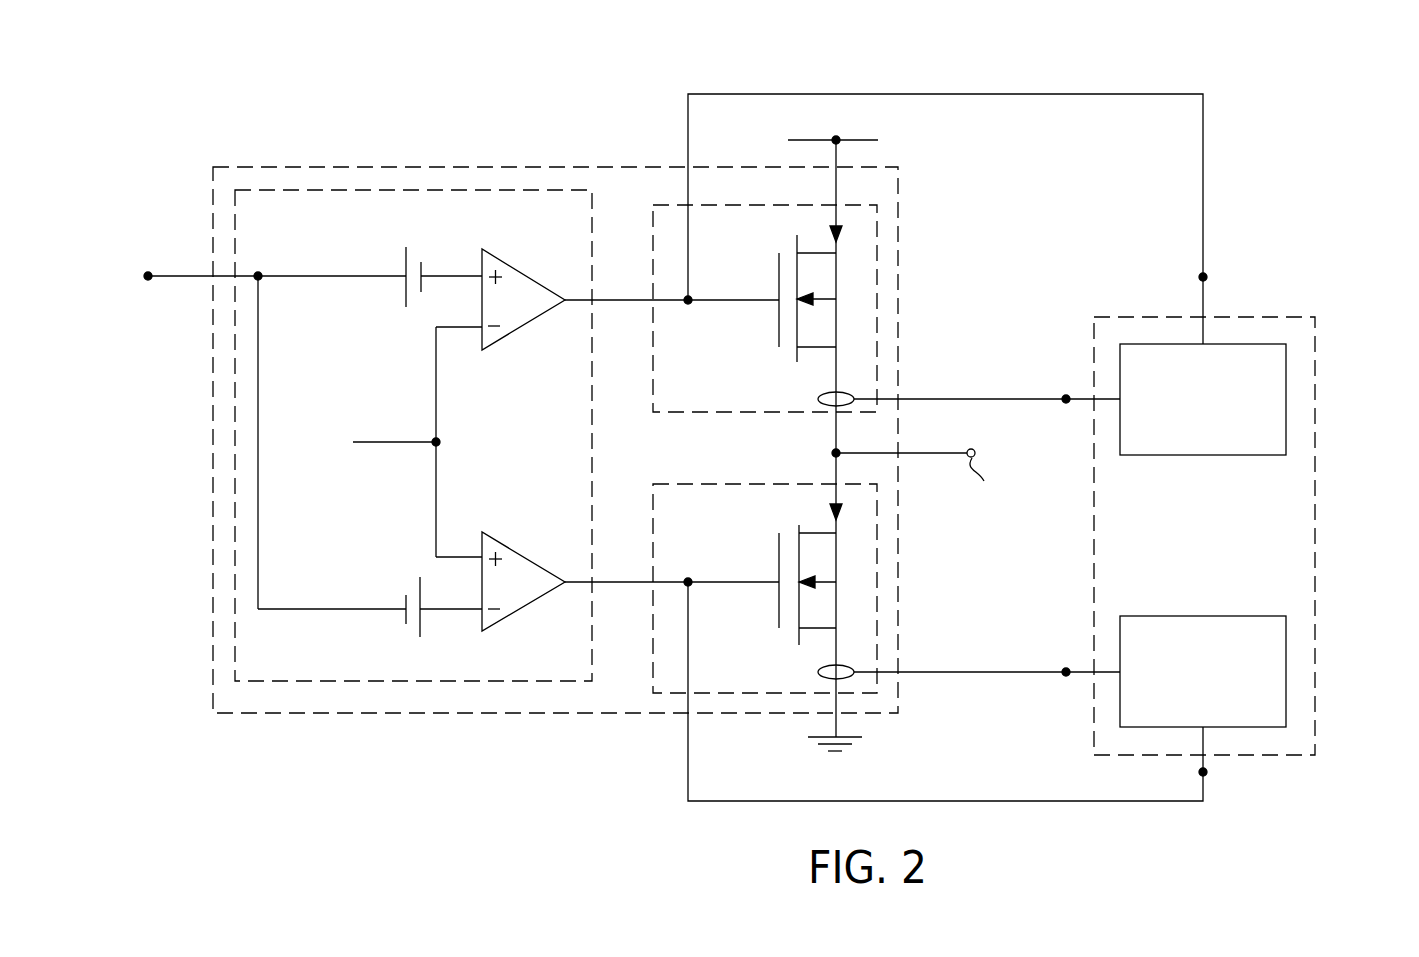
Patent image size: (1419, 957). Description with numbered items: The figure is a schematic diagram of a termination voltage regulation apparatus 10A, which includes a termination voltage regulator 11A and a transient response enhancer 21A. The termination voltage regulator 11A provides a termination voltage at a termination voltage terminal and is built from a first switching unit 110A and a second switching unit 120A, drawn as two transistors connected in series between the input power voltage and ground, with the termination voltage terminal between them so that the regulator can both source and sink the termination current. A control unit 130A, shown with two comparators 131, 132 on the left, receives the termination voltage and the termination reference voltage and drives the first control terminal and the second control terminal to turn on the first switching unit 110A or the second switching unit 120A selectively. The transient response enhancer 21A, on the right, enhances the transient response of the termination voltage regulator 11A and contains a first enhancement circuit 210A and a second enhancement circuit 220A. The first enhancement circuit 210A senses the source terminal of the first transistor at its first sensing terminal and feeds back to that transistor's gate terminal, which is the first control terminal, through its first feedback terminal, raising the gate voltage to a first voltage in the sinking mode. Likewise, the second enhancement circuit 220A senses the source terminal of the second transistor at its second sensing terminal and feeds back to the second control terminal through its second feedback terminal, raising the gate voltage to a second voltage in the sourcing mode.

The termination voltage regulation apparatus 10A is at (1348, 68).
The termination voltage regulator 11A is at (885, 164).
The first switching unit 110A is at (877, 244).
The second switching unit 120A is at (878, 523).
The control unit 130A is at (427, 190).
The comparator 131 is at (519, 270).
The comparator 132 is at (520, 553).
The transient response enhancer 21A is at (1315, 381).
The first enhancement circuit 210A is at (1238, 344).
The second enhancement circuit 220A is at (1183, 616).